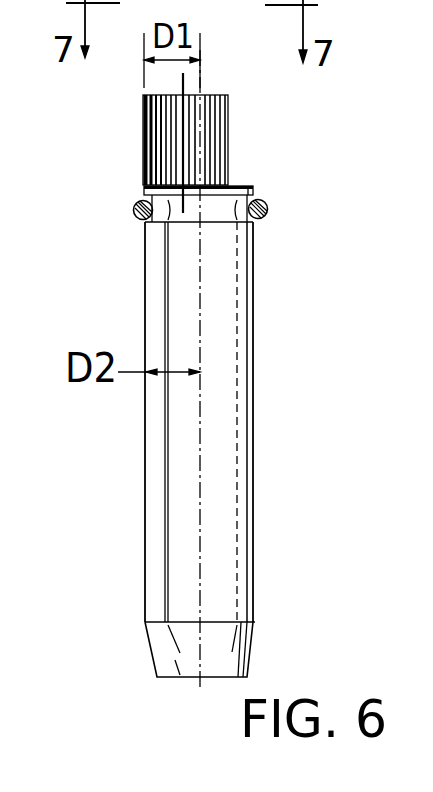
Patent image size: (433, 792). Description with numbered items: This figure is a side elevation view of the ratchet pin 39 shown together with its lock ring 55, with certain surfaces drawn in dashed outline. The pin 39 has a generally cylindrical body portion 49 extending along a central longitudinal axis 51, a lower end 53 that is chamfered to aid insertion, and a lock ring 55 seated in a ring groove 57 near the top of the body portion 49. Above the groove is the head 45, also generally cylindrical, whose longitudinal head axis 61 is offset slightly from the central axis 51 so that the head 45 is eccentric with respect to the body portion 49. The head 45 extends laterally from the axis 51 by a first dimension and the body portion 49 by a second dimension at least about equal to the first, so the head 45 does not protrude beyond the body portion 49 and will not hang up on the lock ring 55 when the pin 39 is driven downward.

The pin 39 is at (118, 511).
The head 45 is at (228, 160).
The cylindrical body portion 49 is at (255, 553).
The central longitudinal axis 51 is at (200, 397).
The lower end 53 is at (250, 655).
The lock ring 55 is at (268, 211).
The ring groove 57 is at (218, 212).
The longitudinal head axis 61 is at (181, 128).